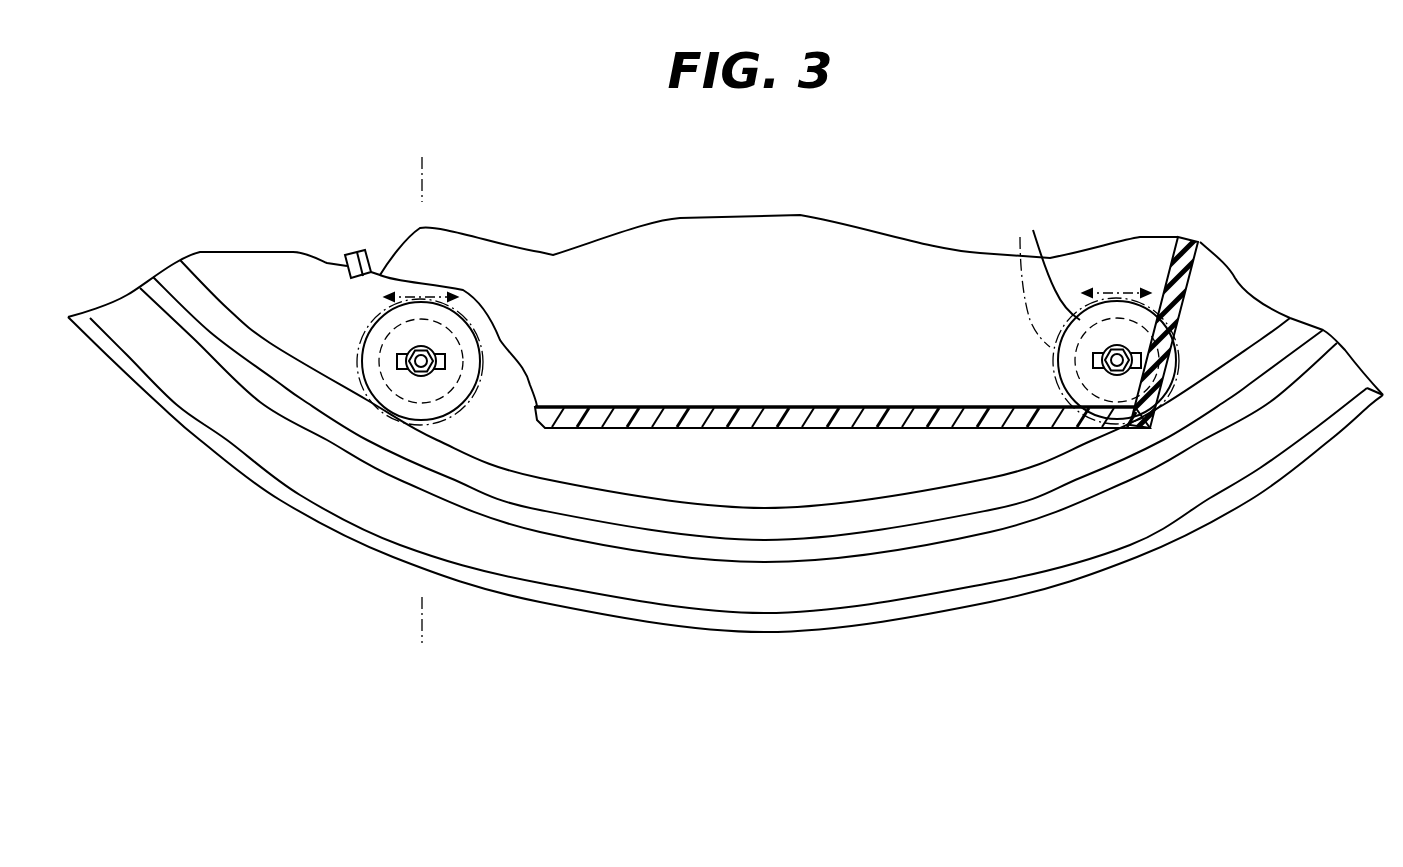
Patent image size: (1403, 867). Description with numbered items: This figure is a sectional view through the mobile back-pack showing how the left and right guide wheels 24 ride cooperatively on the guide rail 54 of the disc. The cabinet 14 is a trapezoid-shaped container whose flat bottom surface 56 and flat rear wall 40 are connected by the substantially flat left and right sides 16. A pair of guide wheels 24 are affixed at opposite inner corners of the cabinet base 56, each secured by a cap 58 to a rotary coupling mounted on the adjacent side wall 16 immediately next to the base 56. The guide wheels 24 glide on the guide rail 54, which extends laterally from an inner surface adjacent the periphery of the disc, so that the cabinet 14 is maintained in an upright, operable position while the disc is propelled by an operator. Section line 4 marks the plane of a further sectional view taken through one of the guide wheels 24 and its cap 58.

The section line 4- 4 is at (424, 163).
The cabinet 14 is at (1196, 283).
The left and right sides 16 is at (328, 263).
The guide wheels 24 is at (1033, 232).
The rear wall 40 is at (827, 262).
The guide rail 54 is at (967, 482).
The bottom surface 56 is at (823, 428).
The cap 58 is at (432, 357).